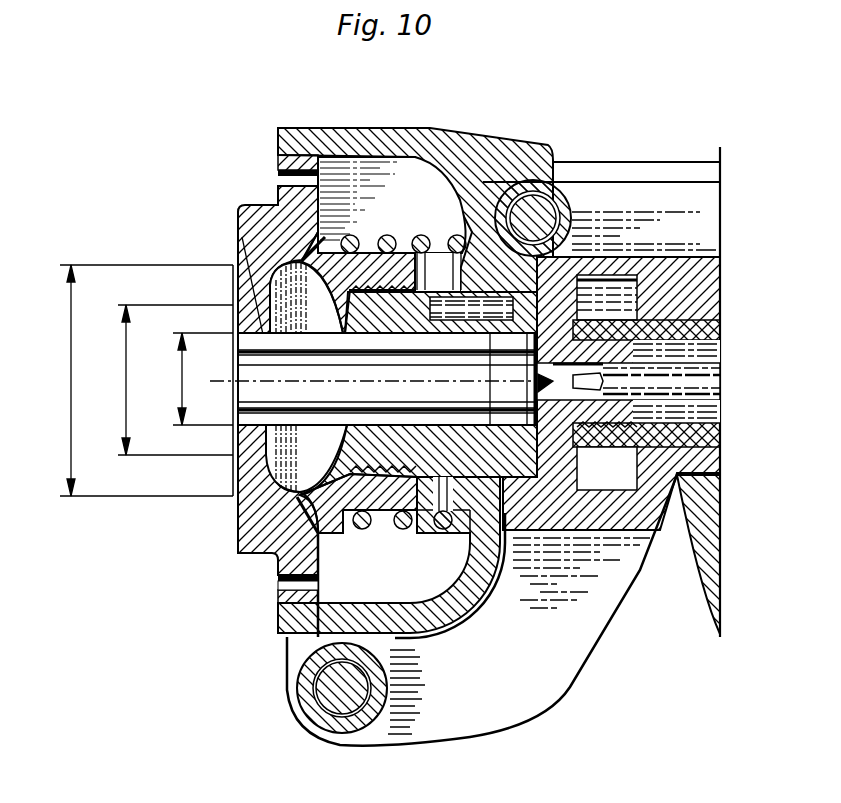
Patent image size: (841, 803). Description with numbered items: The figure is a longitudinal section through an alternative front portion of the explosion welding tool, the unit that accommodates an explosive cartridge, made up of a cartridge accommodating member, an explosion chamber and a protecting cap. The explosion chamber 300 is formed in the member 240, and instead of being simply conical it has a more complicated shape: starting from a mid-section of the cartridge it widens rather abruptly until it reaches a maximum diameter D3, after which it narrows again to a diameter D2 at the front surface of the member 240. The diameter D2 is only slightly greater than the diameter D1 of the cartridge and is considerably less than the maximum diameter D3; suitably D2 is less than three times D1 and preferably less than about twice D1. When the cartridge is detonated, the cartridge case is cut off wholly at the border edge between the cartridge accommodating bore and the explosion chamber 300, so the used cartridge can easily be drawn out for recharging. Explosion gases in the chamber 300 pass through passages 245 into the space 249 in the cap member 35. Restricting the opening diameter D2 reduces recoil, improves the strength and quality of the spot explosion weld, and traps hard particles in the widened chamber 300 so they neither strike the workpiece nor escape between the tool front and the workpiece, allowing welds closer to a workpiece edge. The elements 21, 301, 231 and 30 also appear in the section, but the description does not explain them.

The cap member 35 is at (453, 130).
The member constituting the explosion chamber 240 is at (256, 223).
The hub 21 is at (237, 250).
The seam 301 is at (290, 458).
The explosion chamber 300 is at (253, 555).
The passages 245 is at (278, 582).
The space 249 is at (350, 577).
The O-ring 231 is at (343, 688).
The arm 30 is at (538, 670).
The diameter of the cartridge D1 is at (191, 379).
The diameter at the front surface D2 is at (161, 380).
The maximum diameter of the explosion chamber D3 is at (134, 380).